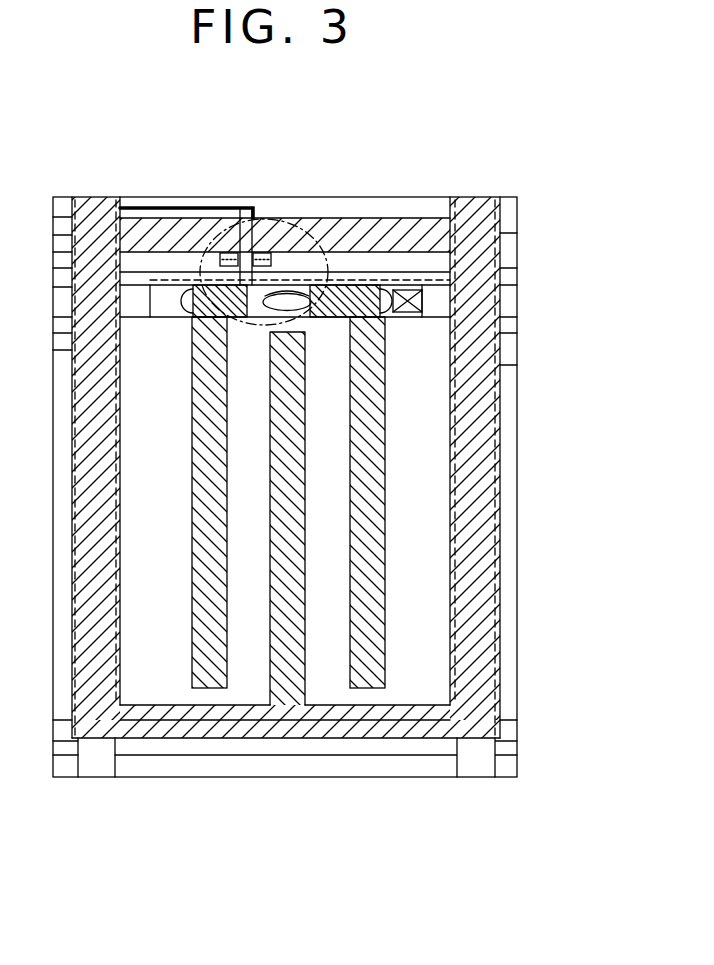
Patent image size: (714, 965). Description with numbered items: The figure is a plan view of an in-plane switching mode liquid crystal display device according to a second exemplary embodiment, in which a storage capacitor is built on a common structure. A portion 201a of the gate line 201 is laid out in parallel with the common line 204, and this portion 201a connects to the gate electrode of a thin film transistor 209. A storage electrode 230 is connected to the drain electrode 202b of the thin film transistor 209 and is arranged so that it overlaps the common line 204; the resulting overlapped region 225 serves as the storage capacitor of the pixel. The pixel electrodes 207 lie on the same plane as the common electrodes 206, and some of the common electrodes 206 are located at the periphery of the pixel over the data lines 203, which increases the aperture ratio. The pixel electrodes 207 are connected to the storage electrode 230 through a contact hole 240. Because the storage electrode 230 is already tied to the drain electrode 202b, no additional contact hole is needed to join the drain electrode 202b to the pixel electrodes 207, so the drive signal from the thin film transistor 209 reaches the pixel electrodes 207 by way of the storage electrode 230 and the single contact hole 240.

The gate line 201 is at (510, 737).
The portion of the gate line 201a is at (244, 210).
The drain electrode 202b is at (232, 278).
The data line 203 is at (98, 764).
The common line 204 is at (505, 299).
The common electrode 206 is at (478, 484).
The pixel electrode 207 is at (372, 540).
The thin film transistor 209 is at (276, 294).
The overlapped region 225 is at (395, 313).
The storage electrode 230 is at (423, 290).
The contact hole 240 is at (324, 280).